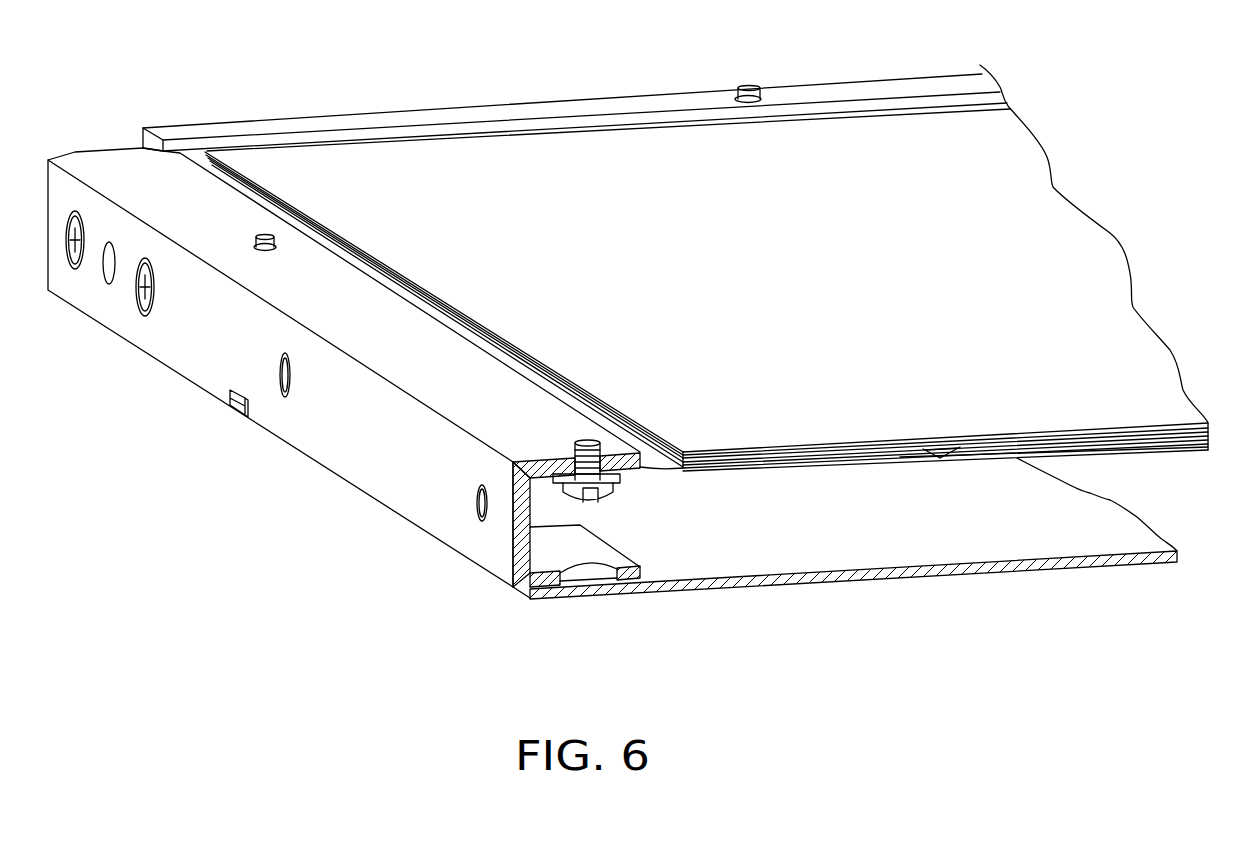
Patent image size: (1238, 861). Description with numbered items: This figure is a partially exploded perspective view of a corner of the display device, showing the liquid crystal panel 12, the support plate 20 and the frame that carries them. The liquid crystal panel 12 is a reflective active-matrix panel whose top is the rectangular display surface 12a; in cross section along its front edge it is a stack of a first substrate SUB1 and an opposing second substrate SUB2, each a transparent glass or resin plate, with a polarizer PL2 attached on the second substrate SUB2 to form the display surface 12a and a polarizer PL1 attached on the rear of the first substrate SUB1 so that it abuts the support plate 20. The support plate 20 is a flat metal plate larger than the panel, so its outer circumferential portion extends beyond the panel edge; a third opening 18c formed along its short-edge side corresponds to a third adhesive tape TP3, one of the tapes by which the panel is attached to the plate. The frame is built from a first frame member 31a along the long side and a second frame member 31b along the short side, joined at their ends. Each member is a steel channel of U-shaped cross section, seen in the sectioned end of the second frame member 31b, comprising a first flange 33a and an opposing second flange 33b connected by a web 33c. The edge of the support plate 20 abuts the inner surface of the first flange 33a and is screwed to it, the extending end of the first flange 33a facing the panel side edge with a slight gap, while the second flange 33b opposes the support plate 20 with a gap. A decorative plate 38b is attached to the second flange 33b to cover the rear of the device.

The liquid crystal panel 12 is at (623, 172).
The display surface 12a is at (820, 158).
The third opening 18c is at (937, 452).
The support plate 20 is at (813, 467).
The first frame member 31a is at (523, 97).
The second frame member 31b is at (380, 470).
The first flange 33a is at (433, 117).
The second flange 33b is at (575, 550).
The web 33c is at (520, 518).
The decorative plate 38b is at (1082, 533).
The polarizer PL1 is at (787, 460).
The polarizer PL2 is at (723, 433).
The first substrate SUB1 is at (712, 460).
The second substrate SUB2 is at (727, 455).
The third adhesive tape TP3 is at (999, 462).